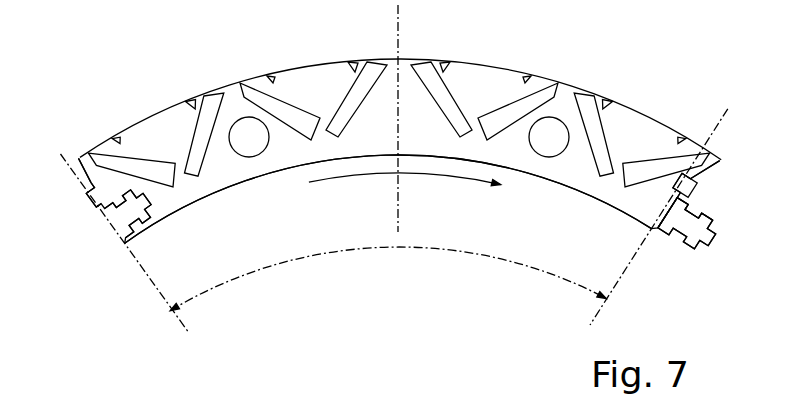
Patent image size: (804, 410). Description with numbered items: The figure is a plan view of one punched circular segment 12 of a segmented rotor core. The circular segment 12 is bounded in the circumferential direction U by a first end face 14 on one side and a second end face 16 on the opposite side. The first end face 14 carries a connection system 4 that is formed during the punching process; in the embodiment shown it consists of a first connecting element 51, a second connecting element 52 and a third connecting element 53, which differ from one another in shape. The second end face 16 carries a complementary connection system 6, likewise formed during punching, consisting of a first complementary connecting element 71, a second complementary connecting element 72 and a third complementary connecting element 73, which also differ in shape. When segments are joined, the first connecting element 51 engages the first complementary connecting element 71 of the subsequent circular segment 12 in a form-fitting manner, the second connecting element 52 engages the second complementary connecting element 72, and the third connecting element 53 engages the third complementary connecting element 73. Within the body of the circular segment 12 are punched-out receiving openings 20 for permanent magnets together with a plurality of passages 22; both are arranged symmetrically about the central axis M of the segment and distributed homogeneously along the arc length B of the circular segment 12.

The connection system 4 is at (703, 188).
The first connecting element 51 is at (683, 237).
The second connecting element 52 is at (698, 206).
The third connecting element 53 is at (718, 158).
The connection system 6 is at (103, 232).
The first complementary connecting element 71 is at (143, 218).
The second complementary connecting element 72 is at (90, 196).
The third complementary connecting element 73 is at (105, 207).
The circular segment 12 is at (441, 158).
The first end face 14 is at (677, 192).
The second end face 16 is at (122, 180).
The receiving openings for permanent magnets 20 is at (172, 160).
The passages 22 is at (250, 137).
The central axis M is at (394, 32).
The circumferential direction U is at (325, 183).
The arc length B is at (603, 299).